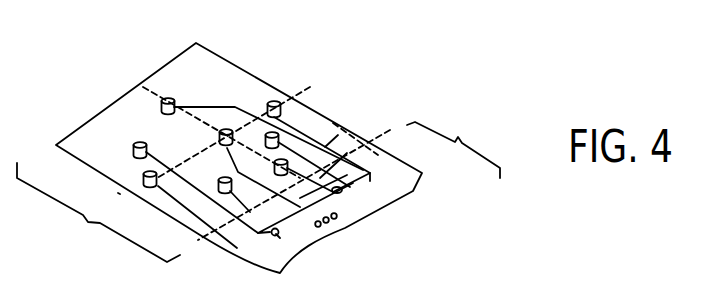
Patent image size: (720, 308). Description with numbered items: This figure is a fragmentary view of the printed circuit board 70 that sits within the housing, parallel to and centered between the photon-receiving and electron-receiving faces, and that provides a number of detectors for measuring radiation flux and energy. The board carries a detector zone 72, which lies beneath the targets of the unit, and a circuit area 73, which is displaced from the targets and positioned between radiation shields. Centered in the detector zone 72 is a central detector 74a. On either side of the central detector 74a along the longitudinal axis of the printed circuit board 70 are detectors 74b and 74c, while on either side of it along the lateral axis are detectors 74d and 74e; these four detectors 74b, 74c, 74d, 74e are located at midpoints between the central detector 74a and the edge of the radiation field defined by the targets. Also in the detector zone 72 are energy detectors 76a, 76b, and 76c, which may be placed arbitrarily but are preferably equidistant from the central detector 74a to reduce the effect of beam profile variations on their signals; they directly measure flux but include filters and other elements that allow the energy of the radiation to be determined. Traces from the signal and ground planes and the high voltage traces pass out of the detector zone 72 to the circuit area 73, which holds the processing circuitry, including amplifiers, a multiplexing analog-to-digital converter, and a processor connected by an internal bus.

The printed circuit board 70 is at (233, 63).
The detector zone 72 is at (98, 212).
The circuit area 73 is at (453, 146).
The central detector 74a is at (224, 131).
The detector 74b is at (168, 100).
The detector 74c is at (287, 163).
The detector 74d is at (272, 103).
The detector 74e is at (151, 190).
The energy detector 76a is at (133, 150).
The energy detector 76b is at (224, 197).
The energy detector 76c is at (278, 137).